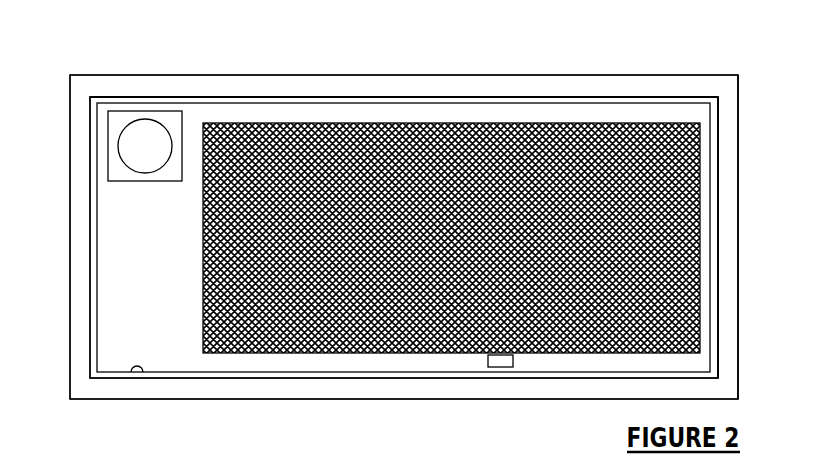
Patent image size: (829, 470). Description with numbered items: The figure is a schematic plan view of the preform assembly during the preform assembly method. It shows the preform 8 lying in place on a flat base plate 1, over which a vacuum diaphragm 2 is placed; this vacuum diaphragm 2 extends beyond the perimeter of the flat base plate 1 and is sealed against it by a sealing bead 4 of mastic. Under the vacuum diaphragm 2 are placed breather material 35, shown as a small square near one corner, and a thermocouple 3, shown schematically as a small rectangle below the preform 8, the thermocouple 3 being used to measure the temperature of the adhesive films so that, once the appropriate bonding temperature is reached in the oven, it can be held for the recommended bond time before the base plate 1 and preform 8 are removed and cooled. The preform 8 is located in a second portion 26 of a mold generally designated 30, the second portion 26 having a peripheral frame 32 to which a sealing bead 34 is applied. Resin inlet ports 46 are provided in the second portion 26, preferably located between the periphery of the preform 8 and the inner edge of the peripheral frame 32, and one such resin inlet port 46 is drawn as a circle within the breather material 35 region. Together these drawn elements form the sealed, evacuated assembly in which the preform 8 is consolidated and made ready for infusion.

The flat base plate 1 is at (80, 388).
The vacuum diaphragm 2 is at (90, 357).
The thermocouple 3 is at (502, 360).
The sealing bead 4 is at (130, 360).
The preform 8 is at (397, 323).
The second portion 26 is at (569, 82).
The mold 30 is at (738, 150).
The peripheral frame 32 is at (722, 300).
The sealing bead 34 is at (336, 94).
The breather material 35 is at (127, 113).
The resin inlet ports 46 is at (138, 155).